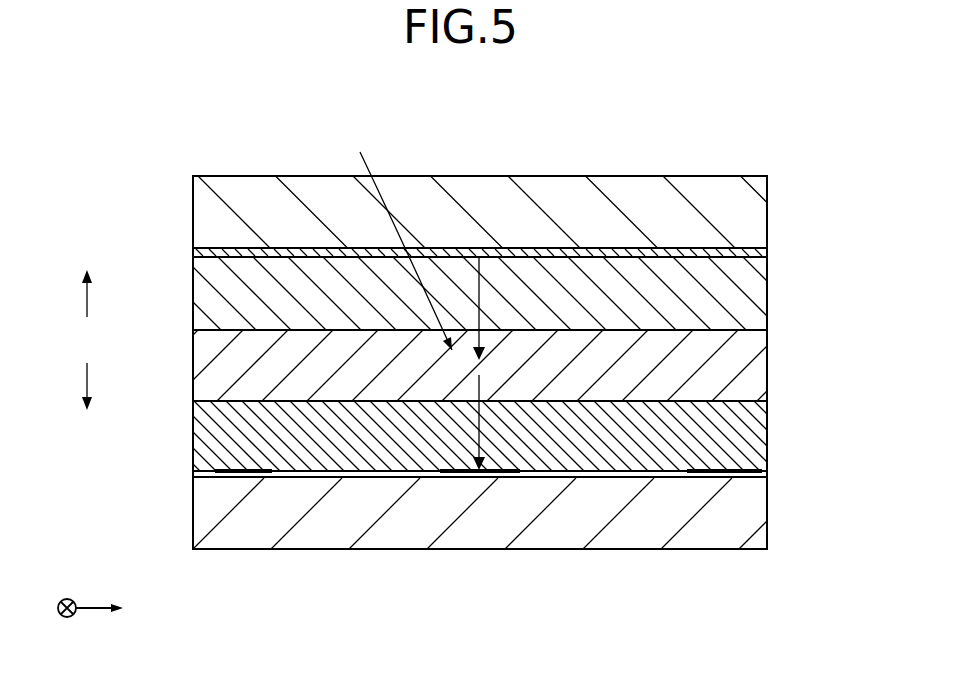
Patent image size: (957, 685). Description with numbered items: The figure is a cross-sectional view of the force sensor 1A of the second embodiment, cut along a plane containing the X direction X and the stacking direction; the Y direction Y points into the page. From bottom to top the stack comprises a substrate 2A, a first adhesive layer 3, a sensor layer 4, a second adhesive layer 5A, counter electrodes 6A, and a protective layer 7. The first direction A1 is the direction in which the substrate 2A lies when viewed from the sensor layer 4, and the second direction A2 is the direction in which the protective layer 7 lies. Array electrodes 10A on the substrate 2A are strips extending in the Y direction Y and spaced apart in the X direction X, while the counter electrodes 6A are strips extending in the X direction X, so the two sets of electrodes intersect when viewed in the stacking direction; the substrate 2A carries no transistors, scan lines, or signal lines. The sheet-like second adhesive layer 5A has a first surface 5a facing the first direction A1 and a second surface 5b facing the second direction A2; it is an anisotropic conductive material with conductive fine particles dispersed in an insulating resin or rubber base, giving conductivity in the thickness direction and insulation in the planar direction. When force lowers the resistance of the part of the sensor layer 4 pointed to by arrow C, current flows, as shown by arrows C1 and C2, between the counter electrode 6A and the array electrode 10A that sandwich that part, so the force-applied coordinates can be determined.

The force sensor 1A is at (759, 141).
The protective layer 7 is at (755, 210).
The counter electrodes 6A is at (751, 257).
The second adhesive layer 5A is at (749, 304).
The second surface 5b is at (193, 249).
The first surface 5a is at (193, 338).
The sensor layer 4 is at (755, 363).
The first adhesive layer 3 is at (753, 423).
The array electrodes 10A is at (215, 471).
The substrate 2A is at (755, 514).
The arrow C is at (403, 237).
The arrow C1 is at (498, 253).
The arrow C2 is at (480, 390).
The first direction A1 is at (87, 403).
The second direction A2 is at (87, 280).
The X direction X is at (109, 610).
The Y direction Y is at (67, 593).